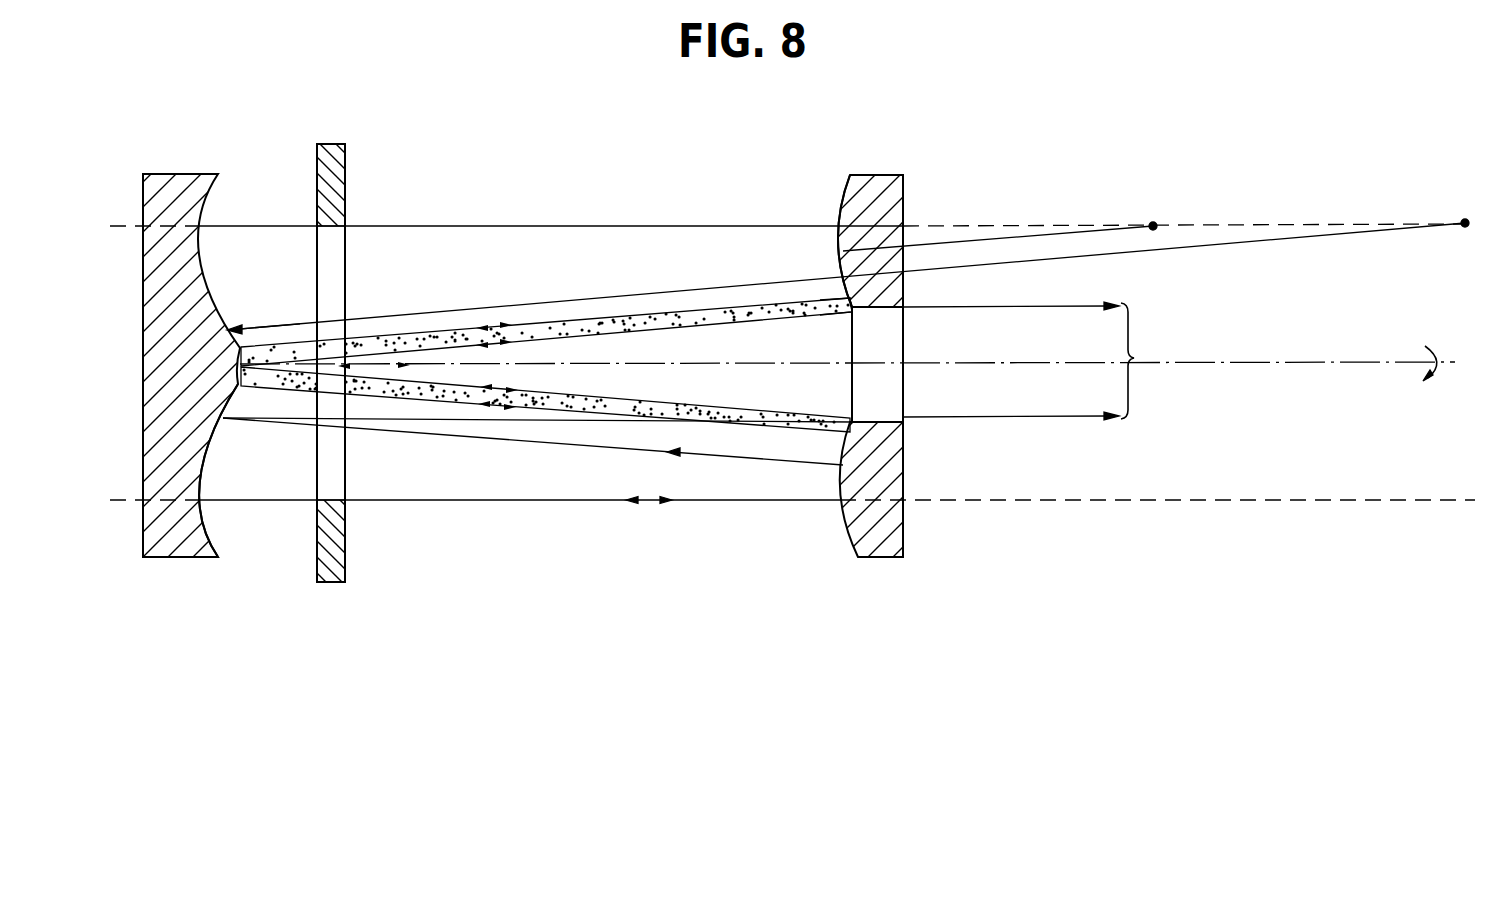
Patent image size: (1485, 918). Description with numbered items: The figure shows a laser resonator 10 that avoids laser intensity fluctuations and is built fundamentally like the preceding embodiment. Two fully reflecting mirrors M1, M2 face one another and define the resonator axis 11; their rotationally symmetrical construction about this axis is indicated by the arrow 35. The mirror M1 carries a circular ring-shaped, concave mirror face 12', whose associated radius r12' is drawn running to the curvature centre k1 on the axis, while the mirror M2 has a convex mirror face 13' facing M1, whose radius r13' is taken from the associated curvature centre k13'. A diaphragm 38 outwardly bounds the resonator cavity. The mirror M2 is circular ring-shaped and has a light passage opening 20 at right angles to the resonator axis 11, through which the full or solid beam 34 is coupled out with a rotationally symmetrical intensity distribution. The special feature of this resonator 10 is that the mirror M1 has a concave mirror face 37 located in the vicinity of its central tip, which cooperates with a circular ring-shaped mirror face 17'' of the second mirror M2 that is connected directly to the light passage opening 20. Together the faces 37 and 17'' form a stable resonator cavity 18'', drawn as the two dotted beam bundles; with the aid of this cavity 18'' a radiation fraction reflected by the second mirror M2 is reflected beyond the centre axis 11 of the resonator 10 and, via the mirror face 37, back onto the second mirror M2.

The resonator 10 is at (204, 116).
The diaphragm 38 is at (347, 175).
The concave mirror face 37 is at (263, 330).
The stable resonator cavity 18'' is at (546, 369).
The mirror face 17'' is at (817, 330).
The convex mirror face 13' is at (809, 241).
The radius of the convex mirror face r13' is at (998, 205).
The curvature centre k13' is at (1156, 199).
The radius of the concave mirror face r12' is at (846, 248).
The center of curvature of first mirror k1 is at (1466, 219).
The solid beam 34 is at (1030, 361).
The light passage opening 20 is at (896, 392).
The resonator axis 11 is at (1257, 366).
The arrow 35 is at (1443, 378).
The concave mirror face 12' is at (235, 474).
The mirror M1 is at (192, 560).
The mirror M2 is at (888, 559).